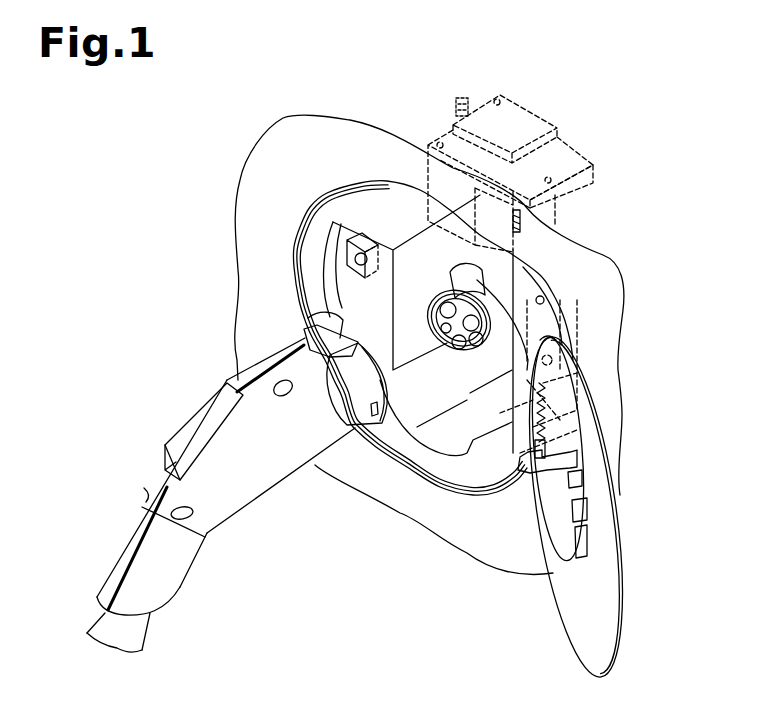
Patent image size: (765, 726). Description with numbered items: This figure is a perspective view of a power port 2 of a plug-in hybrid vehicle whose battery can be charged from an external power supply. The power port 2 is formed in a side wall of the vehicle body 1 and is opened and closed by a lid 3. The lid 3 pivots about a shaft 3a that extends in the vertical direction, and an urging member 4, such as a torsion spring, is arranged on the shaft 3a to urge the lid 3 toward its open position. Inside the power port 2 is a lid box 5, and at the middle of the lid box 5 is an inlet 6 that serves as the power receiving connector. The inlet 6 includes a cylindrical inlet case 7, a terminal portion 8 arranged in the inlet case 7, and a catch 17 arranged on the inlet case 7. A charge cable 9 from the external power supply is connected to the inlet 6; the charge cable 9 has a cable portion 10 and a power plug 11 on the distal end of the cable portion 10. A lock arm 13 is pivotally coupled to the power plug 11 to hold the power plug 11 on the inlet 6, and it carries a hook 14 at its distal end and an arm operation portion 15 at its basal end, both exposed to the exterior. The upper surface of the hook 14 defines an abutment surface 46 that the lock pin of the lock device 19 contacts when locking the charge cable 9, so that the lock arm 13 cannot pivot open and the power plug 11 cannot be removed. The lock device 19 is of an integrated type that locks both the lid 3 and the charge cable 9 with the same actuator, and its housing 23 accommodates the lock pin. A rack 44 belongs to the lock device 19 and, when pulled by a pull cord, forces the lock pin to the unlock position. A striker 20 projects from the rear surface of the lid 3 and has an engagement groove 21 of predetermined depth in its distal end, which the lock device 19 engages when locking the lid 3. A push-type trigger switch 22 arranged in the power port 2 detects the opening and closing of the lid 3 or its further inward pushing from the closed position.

The body 1 is at (458, 530).
The power port 2 is at (340, 210).
The lid 3 is at (614, 554).
The shaft 3a is at (594, 376).
The urging member 4 is at (585, 385).
The lid box 5 is at (489, 490).
The inlet 6 is at (436, 326).
The inlet case 7 is at (453, 362).
The terminal portion 8 is at (430, 302).
The charge cable 9 is at (120, 539).
The cable portion 10 is at (100, 618).
The power plug 11 is at (260, 487).
The lock arm 13 is at (302, 333).
The hook 14 is at (360, 343).
The arm operation portion 15 is at (197, 420).
The catch 17 is at (462, 276).
The lock device 19 is at (447, 130).
The striker 20 is at (527, 475).
The engagement groove 21 is at (555, 448).
The trigger switch 22 is at (352, 243).
The housing 23 is at (582, 150).
The rack 44 is at (453, 105).
The abutment surface 46 is at (340, 313).